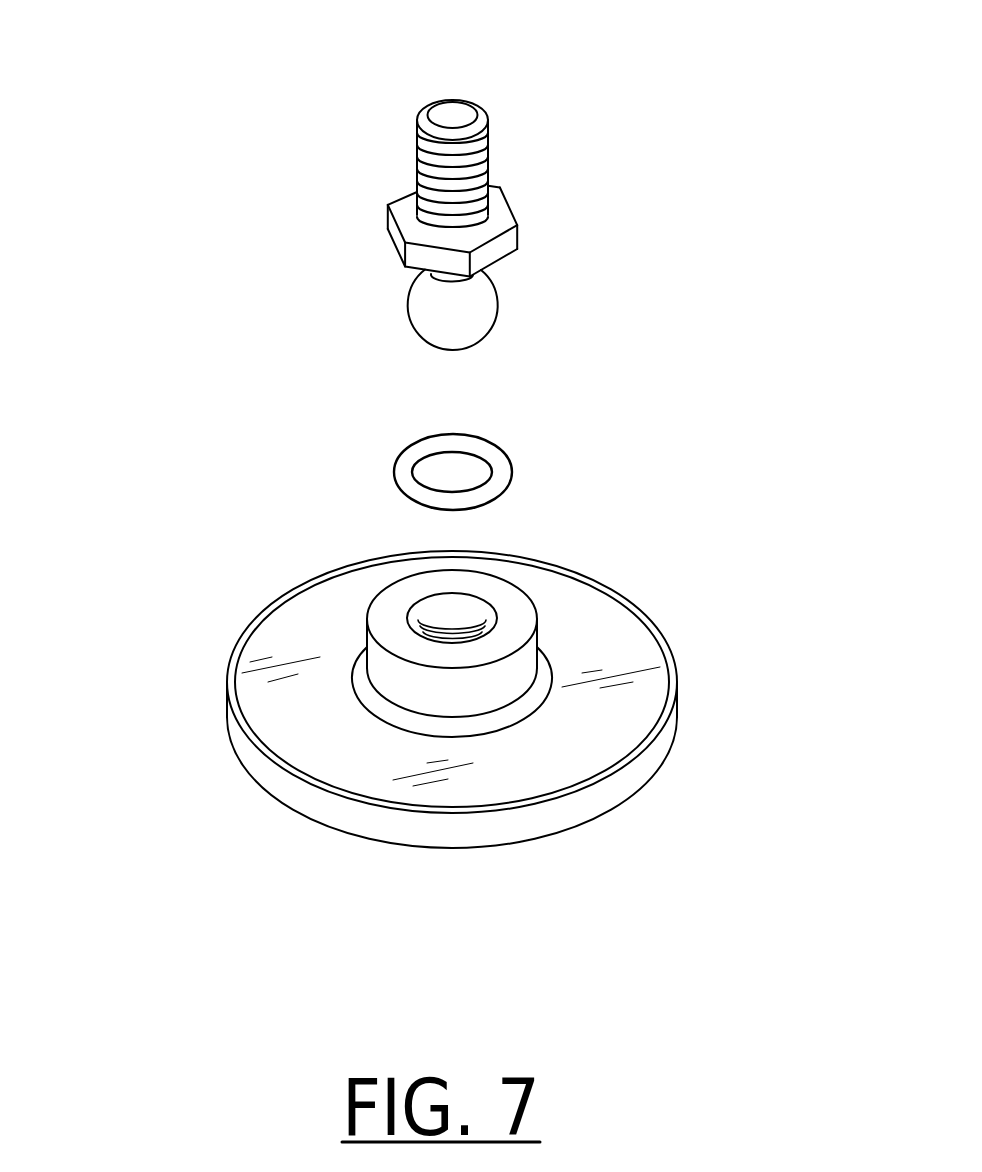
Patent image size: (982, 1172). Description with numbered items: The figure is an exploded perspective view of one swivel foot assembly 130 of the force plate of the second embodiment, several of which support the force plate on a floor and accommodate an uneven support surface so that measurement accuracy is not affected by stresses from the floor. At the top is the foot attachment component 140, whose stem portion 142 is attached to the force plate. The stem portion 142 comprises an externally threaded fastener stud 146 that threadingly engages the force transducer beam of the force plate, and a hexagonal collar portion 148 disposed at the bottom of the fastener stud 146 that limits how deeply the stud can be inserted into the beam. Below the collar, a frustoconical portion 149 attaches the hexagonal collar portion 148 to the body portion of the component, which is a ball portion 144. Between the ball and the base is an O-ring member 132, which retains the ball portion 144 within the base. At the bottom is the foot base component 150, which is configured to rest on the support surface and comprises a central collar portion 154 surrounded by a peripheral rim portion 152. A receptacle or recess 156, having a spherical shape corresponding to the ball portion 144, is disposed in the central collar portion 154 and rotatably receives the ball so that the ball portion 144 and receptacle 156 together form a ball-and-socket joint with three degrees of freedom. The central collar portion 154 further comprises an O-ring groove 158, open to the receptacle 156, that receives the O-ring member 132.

The swivel foot assembly 130 is at (268, 447).
The foot attachment component 140 is at (505, 196).
The stem portion 142 is at (452, 115).
The ball portion 144 is at (473, 308).
The fastener stud 146 is at (437, 152).
The hexagonal collar portion 148 is at (437, 261).
The frustoconical portion 149 is at (447, 278).
The O-ring member 132 is at (505, 472).
The foot base component 150 is at (490, 848).
The peripheral rim portion 152 is at (613, 740).
The central collar portion 154 is at (367, 648).
The receptacle or recess 156 is at (463, 617).
The O-ring groove 158 is at (440, 640).